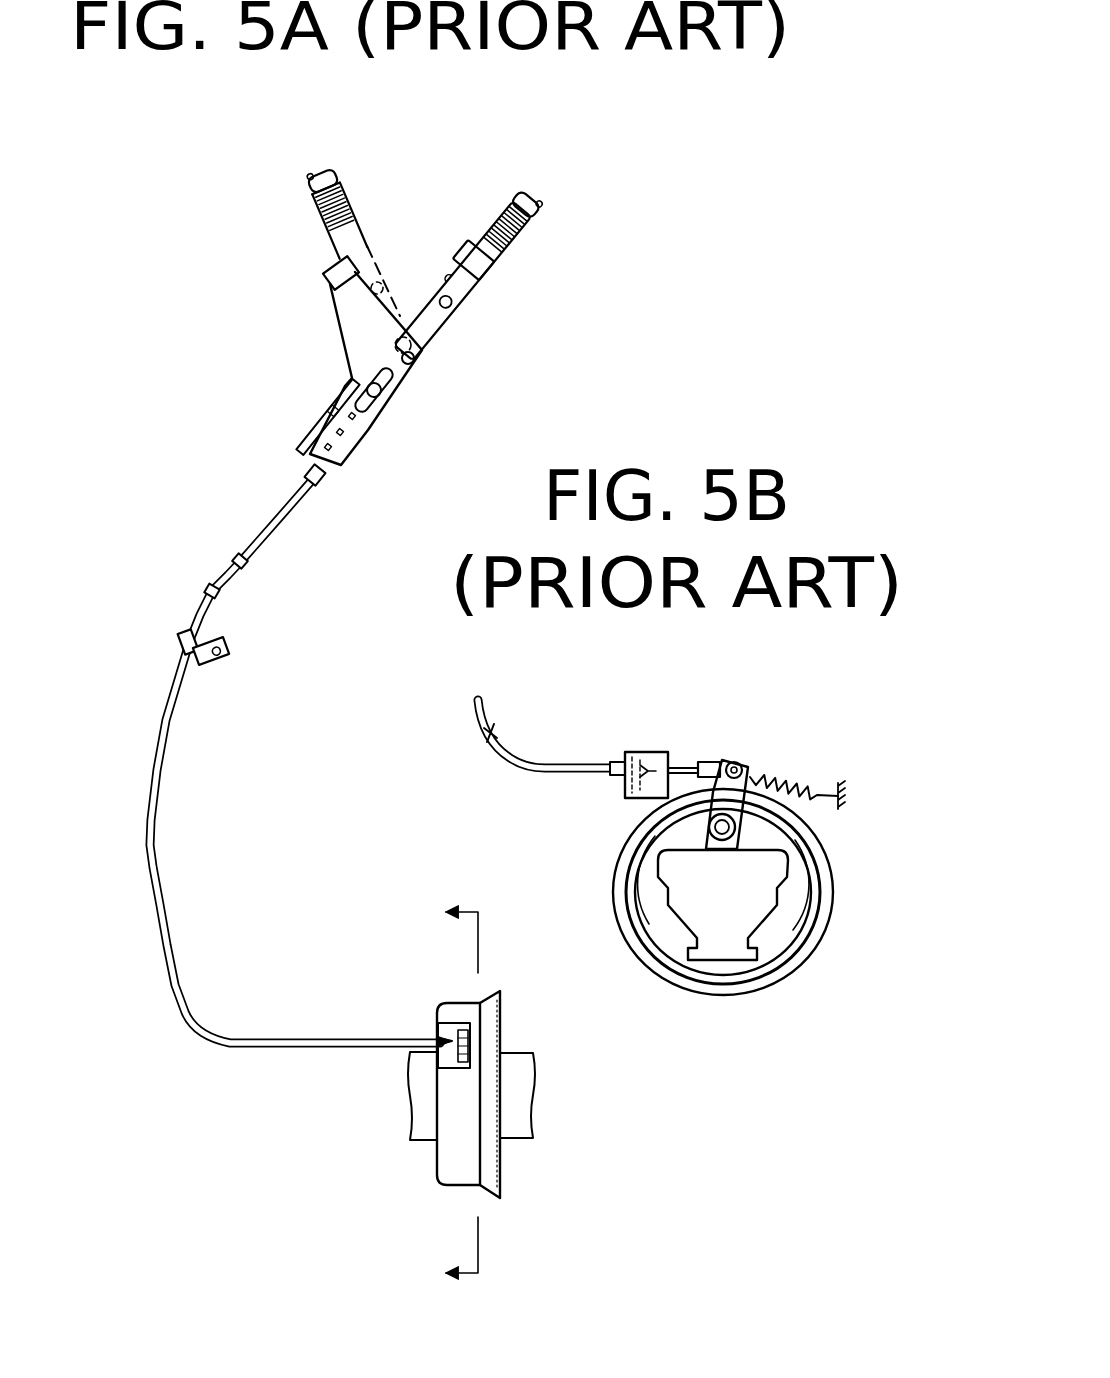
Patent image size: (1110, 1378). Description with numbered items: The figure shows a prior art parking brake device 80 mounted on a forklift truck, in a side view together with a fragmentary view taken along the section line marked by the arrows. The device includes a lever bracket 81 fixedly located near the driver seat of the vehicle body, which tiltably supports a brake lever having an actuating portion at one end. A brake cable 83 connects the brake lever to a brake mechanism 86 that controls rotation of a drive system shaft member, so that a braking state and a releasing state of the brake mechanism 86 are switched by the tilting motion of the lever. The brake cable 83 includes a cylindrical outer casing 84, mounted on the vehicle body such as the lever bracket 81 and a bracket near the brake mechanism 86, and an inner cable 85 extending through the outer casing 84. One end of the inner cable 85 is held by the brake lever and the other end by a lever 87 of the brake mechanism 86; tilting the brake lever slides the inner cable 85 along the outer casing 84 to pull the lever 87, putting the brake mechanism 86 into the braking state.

In FIG. 5A, the parking brake device 80 is at (150, 175).
In FIG. 5A, the lever bracket 81 is at (338, 332).
In FIG. 5A, the brake cable 83 is at (308, 506).
In FIG. 5B, the brake cable 83 is at (543, 755).
In FIG. 5A, the outer casing 84 is at (274, 521).
In FIG. 5B, the outer casing 84 is at (588, 763).
In FIG. 5A, the inner cable 85 is at (362, 441).
In FIG. 5B, the inner cable 85 is at (679, 752).
In FIG. 5A, the brake mechanism 86 is at (436, 1002).
In FIG. 5B, the brake mechanism 86 is at (618, 848).
In FIG. 5B, the lever 87 is at (749, 777).